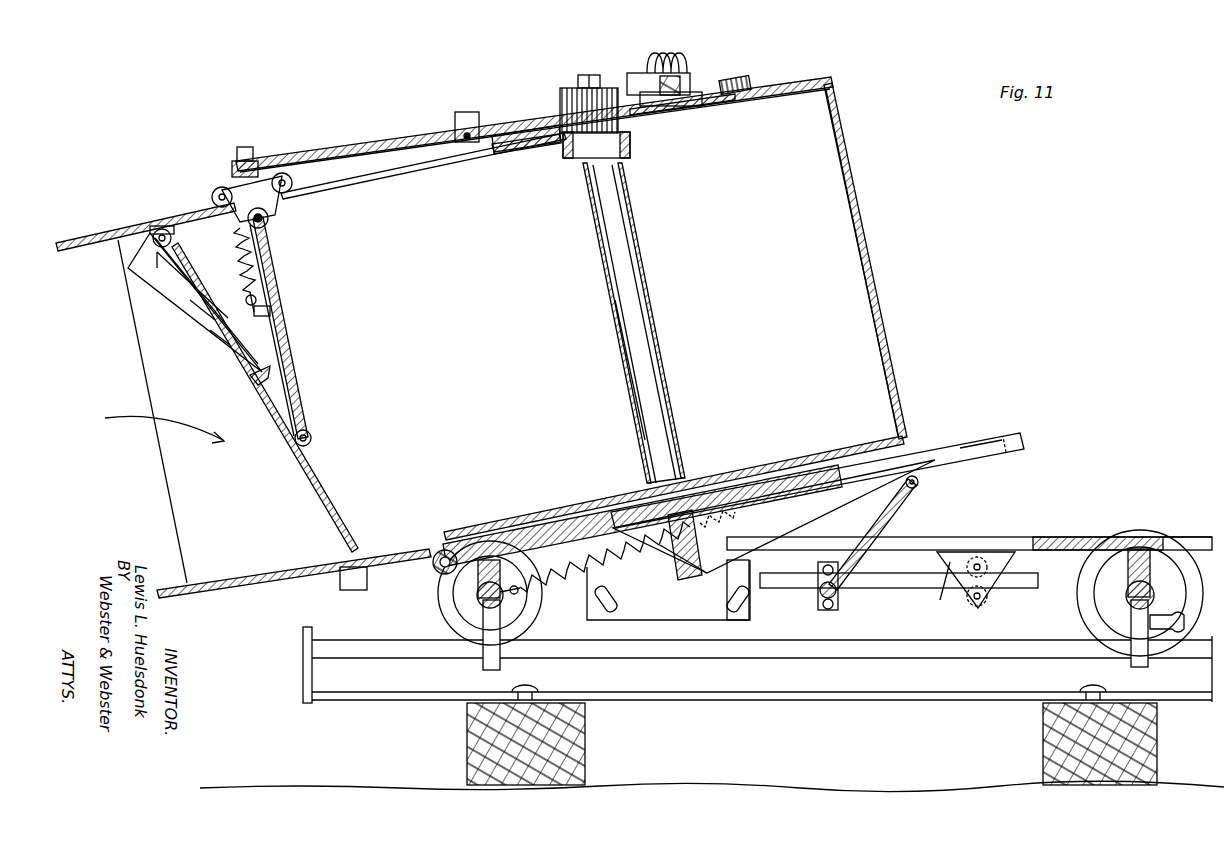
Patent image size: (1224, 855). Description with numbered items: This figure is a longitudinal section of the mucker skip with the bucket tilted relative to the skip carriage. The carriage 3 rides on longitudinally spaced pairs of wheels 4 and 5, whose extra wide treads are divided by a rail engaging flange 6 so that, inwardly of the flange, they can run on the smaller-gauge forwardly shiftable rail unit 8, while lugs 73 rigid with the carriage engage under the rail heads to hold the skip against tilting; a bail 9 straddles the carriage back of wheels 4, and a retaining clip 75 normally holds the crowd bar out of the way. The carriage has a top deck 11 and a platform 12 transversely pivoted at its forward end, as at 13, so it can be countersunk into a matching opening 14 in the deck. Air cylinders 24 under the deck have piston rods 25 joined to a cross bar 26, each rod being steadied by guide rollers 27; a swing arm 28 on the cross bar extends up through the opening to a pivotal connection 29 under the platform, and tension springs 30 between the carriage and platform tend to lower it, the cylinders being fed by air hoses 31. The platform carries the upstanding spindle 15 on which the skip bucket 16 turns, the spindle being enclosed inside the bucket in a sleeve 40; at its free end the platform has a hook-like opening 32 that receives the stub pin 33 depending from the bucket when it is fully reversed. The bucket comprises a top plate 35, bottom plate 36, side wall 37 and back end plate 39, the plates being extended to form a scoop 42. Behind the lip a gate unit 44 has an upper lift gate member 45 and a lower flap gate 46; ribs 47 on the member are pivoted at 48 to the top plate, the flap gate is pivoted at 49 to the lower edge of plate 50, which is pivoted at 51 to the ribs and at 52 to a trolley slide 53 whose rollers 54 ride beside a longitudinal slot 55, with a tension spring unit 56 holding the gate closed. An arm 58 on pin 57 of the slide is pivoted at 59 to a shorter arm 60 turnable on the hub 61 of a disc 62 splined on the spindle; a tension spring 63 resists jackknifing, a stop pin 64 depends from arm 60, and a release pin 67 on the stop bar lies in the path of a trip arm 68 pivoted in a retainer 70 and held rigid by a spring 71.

The carriage 3 is at (795, 535).
The wheels 4 is at (472, 610).
The wheels 5 is at (1112, 570).
The rail engaging flange 6 is at (448, 594).
The rail unit 8 is at (802, 680).
The bail 9 is at (1180, 537).
The top deck 11 is at (1045, 537).
The platform 12 is at (915, 457).
The pivot 13 is at (440, 550).
The opening 14 is at (982, 552).
The spindle 15 is at (640, 340).
The skip bucket 16 is at (873, 224).
The air cylinders 24 is at (672, 625).
The piston rods 25 is at (876, 590).
The cross bar 26 is at (820, 598).
The guide rollers 27 is at (968, 580).
The swing arm 28 is at (890, 512).
The pivotal connection 29 is at (920, 480).
The tension springs 30 is at (572, 578).
The air hoses 31 is at (612, 605).
The hook-like opening 32 is at (995, 440).
The stub pin 33 is at (348, 583).
The top plate 35 is at (72, 243).
The bottom plate 36 is at (528, 505).
The side wall 37 is at (140, 360).
The back end plate 39 is at (884, 290).
The sleeve 40 is at (640, 256).
The scoop 42 is at (153, 429).
The gate unit 44 is at (228, 345).
The lift gate member 45 is at (150, 293).
The flap gate 46 is at (305, 460).
The ribs 47 is at (190, 300).
The pivot 48 is at (160, 228).
The pivot 49 is at (311, 436).
The plate 50 is at (303, 298).
The pivot 51 is at (250, 372).
The pivot 52 is at (269, 218).
The trolley slide 53 is at (272, 196).
The rollers 54 is at (275, 177).
The longitudinal slot 55 is at (420, 170).
The tension spring unit 56 is at (236, 245).
The pin 57 is at (247, 146).
The arm 58 is at (360, 150).
The pivot 59 is at (470, 112).
The arm 60 is at (524, 128).
The hub 61 is at (600, 88).
The disc 62 is at (545, 152).
The tension spring 63 is at (670, 52).
The stop pin 64 is at (690, 80).
The release pin 67 is at (636, 158).
The trip arm 68 is at (665, 115).
The retainer 70 is at (696, 112).
The spring 71 is at (742, 76).
The lugs 73 is at (493, 650).
The retaining clip 75 is at (1178, 635).